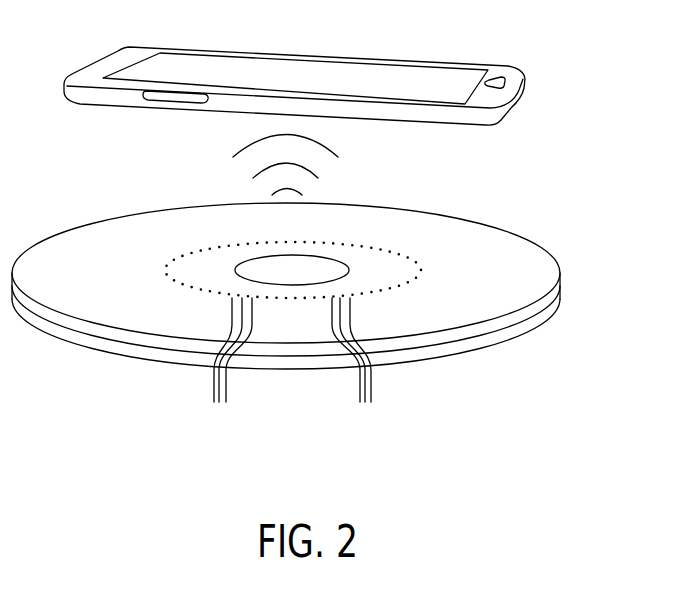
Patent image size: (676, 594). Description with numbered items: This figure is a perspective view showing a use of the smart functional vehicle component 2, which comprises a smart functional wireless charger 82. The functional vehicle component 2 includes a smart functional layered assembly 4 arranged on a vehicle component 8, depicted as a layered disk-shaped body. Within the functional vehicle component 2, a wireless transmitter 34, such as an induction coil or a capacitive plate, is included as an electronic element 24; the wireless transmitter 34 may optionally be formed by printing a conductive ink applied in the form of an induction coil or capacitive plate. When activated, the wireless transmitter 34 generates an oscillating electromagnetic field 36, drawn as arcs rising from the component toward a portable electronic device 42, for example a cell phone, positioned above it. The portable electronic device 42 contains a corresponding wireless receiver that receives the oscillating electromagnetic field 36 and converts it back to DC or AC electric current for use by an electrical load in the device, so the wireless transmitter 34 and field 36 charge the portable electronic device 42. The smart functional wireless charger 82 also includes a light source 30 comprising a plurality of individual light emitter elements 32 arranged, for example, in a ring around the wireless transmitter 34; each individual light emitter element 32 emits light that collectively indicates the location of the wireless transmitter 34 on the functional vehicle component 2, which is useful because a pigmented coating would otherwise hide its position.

The smart functional vehicle component 2 is at (309, 226).
The smart functional wireless charger 82 is at (309, 226).
The smart functional layered assembly 4 is at (557, 288).
The vehicle component 8 is at (553, 310).
The electronic element 24 is at (304, 331).
The light source 30 is at (304, 331).
The individual light emitter elements 32 is at (291, 369).
The wireless transmitter 34 is at (316, 267).
The oscillating electromagnetic field 36 is at (225, 123).
The portable electronic device 42 is at (508, 70).